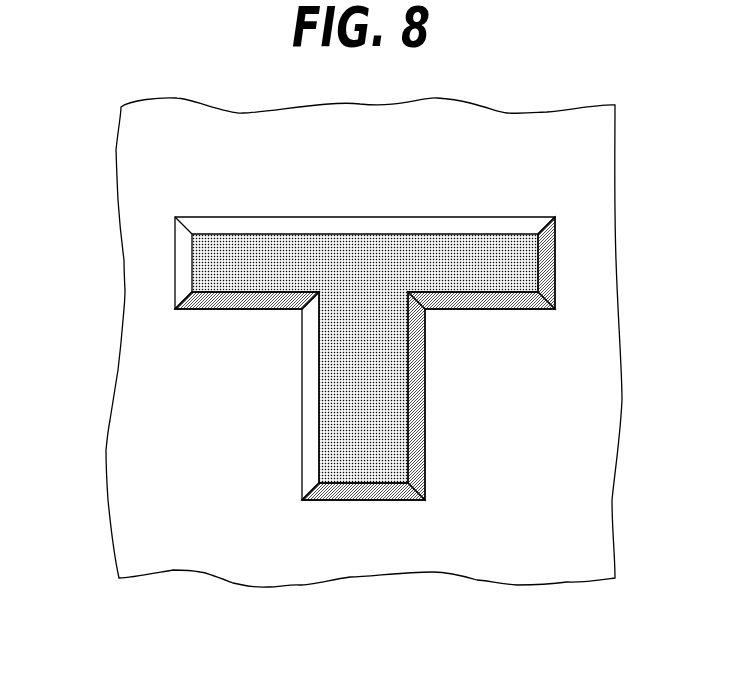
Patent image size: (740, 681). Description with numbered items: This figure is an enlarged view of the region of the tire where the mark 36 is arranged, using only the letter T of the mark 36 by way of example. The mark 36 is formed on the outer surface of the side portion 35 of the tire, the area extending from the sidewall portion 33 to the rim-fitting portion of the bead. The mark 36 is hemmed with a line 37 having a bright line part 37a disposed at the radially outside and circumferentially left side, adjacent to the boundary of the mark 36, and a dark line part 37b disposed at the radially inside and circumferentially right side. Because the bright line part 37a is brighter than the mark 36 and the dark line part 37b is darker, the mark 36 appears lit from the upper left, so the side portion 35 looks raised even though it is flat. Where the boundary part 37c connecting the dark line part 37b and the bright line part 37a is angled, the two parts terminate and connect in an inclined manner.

The sidewall portion 33 is at (323, 342).
The side portion of the tire 35 is at (177, 418).
The mark 36 is at (365, 470).
The line 37 is at (370, 398).
The bright line part 37a is at (408, 228).
The dark line part 37b is at (545, 265).
The boundary part 37c is at (556, 216).